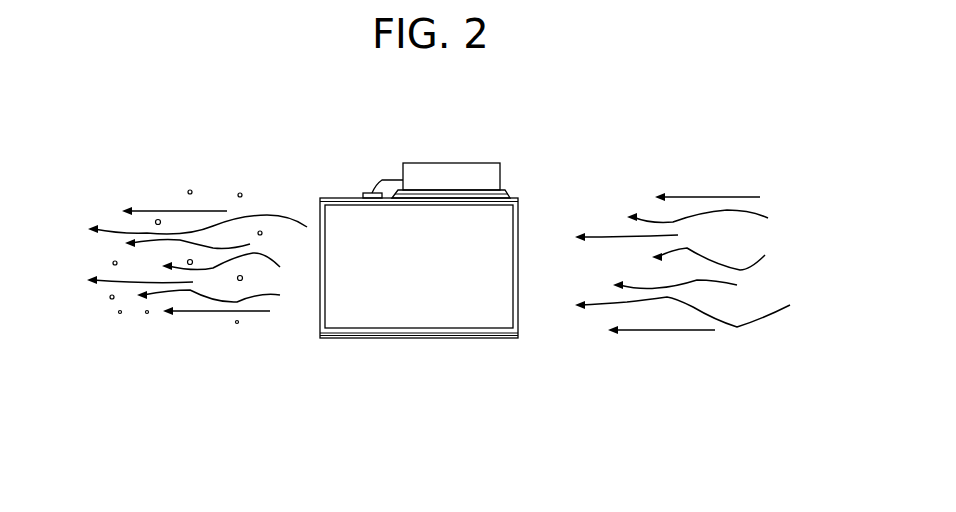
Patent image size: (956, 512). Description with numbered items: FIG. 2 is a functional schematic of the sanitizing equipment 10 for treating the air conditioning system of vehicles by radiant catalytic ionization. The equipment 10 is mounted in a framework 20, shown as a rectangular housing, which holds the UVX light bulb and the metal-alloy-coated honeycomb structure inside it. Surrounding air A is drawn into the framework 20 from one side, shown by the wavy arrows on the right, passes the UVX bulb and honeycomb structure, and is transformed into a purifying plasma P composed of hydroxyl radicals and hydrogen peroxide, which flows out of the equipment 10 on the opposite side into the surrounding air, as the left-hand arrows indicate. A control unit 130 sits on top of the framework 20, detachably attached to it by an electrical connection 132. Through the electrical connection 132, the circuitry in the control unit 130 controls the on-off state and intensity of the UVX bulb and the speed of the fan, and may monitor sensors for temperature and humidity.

The sanitizing equipment 10 is at (343, 141).
The framework 20 is at (320, 336).
The control unit 130 is at (467, 175).
The electrical connection 132 is at (383, 178).
The purifying plasma P is at (153, 211).
The air A is at (675, 197).